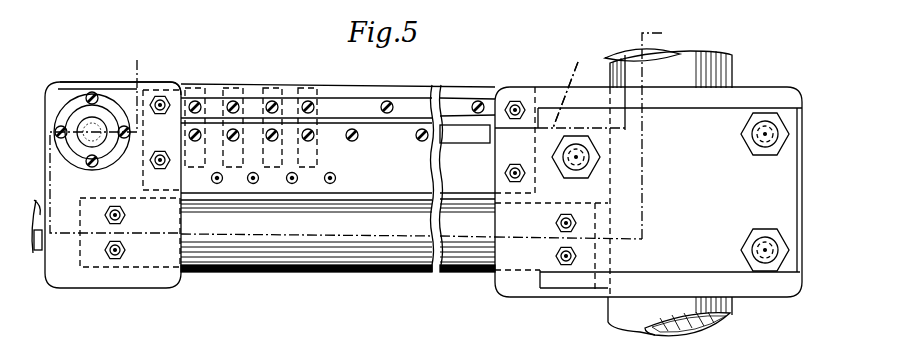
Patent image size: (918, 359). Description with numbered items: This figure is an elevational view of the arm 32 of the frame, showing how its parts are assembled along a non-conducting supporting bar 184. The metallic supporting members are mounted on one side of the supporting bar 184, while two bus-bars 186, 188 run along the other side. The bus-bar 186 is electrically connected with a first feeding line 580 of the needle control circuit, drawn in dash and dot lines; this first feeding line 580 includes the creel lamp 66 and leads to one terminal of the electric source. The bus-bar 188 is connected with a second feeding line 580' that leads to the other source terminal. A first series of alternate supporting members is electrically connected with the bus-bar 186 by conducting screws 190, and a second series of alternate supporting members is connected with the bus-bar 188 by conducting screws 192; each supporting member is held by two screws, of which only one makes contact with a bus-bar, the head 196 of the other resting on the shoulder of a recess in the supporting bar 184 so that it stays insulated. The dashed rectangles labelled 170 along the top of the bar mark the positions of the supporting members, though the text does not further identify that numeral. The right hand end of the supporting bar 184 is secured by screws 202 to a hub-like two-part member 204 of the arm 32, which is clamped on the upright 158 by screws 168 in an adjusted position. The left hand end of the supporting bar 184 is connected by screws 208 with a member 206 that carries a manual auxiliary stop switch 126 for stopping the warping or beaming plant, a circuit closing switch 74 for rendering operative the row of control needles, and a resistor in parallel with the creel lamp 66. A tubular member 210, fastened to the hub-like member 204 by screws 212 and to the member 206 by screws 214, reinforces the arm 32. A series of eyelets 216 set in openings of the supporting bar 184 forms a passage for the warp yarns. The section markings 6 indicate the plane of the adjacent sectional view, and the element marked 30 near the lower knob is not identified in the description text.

The section line 6- 6 is at (327, 322).
The lower knob / adjusting screw head 30 is at (739, 317).
The arm 32 is at (409, 283).
The creel lamp 66 is at (85, 128).
The circuit closing switch 74 is at (34, 205).
The manual auxiliary stop switch 126 is at (45, 250).
The upright 158 is at (735, 62).
The screws 168 is at (568, 178).
The contact blocks 170 is at (270, 88).
The supporting bar 184 is at (463, 92).
The bus-bar 186 is at (333, 102).
The bus-bar 188 is at (378, 140).
The screws 190 is at (304, 105).
The screws 192 is at (422, 142).
The head 196 is at (310, 142).
The screws 202 is at (515, 100).
The hub-like two-part member 204 is at (640, 258).
The member 206 is at (108, 82).
The screws 208 is at (160, 135).
The tubular member 210 is at (217, 268).
The screws 212 is at (577, 222).
The screws 214 is at (134, 250).
The eyelets 216 is at (328, 185).
The first feeding line 580 is at (370, 169).
The second feeding line 580' is at (569, 88).